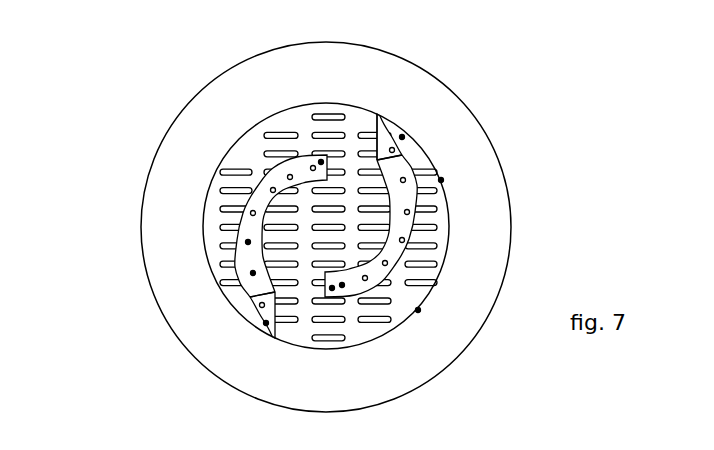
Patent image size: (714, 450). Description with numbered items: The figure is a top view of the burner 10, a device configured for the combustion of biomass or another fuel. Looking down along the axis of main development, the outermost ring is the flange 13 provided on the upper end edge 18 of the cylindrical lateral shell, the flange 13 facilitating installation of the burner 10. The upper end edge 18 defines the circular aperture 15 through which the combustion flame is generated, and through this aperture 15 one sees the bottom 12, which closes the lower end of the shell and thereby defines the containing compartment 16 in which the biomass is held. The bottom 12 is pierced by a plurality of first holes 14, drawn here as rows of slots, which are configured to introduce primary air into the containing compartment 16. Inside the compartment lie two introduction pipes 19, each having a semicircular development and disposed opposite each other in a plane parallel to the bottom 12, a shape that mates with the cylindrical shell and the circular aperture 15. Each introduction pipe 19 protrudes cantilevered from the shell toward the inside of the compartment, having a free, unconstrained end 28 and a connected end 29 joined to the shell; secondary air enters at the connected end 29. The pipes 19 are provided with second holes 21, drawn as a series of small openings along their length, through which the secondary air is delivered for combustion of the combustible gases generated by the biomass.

The burner 10 is at (84, 102).
The bottom 12 is at (246, 155).
The flange 13 is at (498, 253).
The first holes 14 is at (327, 117).
The aperture 15 is at (441, 180).
The containing compartment 16 is at (380, 112).
The upper end edge 18 is at (482, 289).
The introduction pipe 19 is at (408, 229).
The second holes 21 is at (247, 243).
The free end 28 is at (321, 162).
The connected end 29 is at (402, 137).